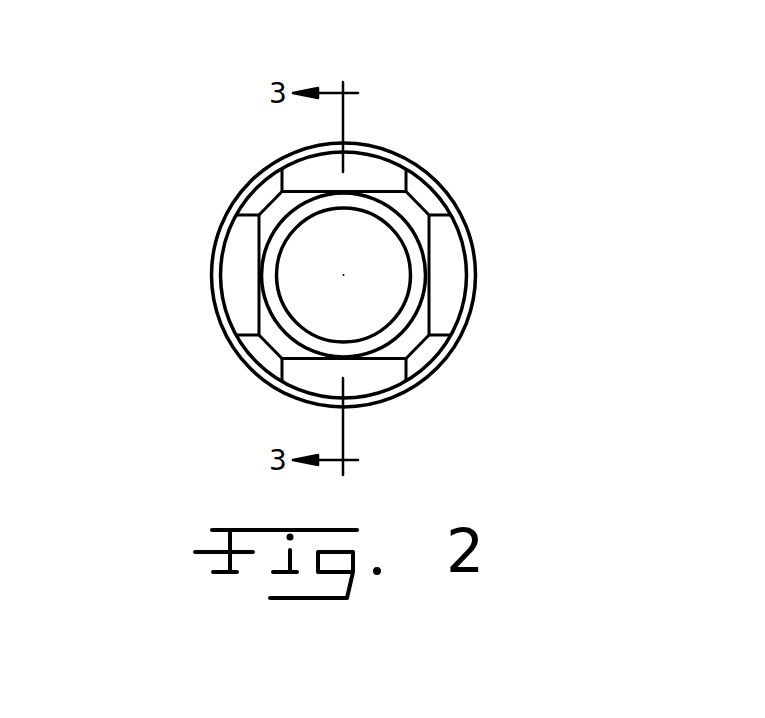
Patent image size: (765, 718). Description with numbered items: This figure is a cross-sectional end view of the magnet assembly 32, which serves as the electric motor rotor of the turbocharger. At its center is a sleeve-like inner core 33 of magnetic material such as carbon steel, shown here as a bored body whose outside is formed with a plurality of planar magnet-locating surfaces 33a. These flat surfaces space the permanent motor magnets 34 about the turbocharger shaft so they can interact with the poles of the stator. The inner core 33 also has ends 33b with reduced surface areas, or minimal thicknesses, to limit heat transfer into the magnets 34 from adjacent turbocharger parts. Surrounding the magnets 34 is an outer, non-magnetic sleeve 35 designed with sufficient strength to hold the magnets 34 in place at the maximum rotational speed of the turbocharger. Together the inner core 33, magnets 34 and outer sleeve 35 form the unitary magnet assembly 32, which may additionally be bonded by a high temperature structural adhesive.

The magnet assembly 32 is at (430, 113).
The inner core 33 is at (262, 197).
The planar magnet-locating surfaces 33a is at (300, 192).
The ends 33b is at (402, 320).
The permanent motor magnets 34 is at (297, 378).
The outer non-magnetic sleeve 35 is at (214, 246).